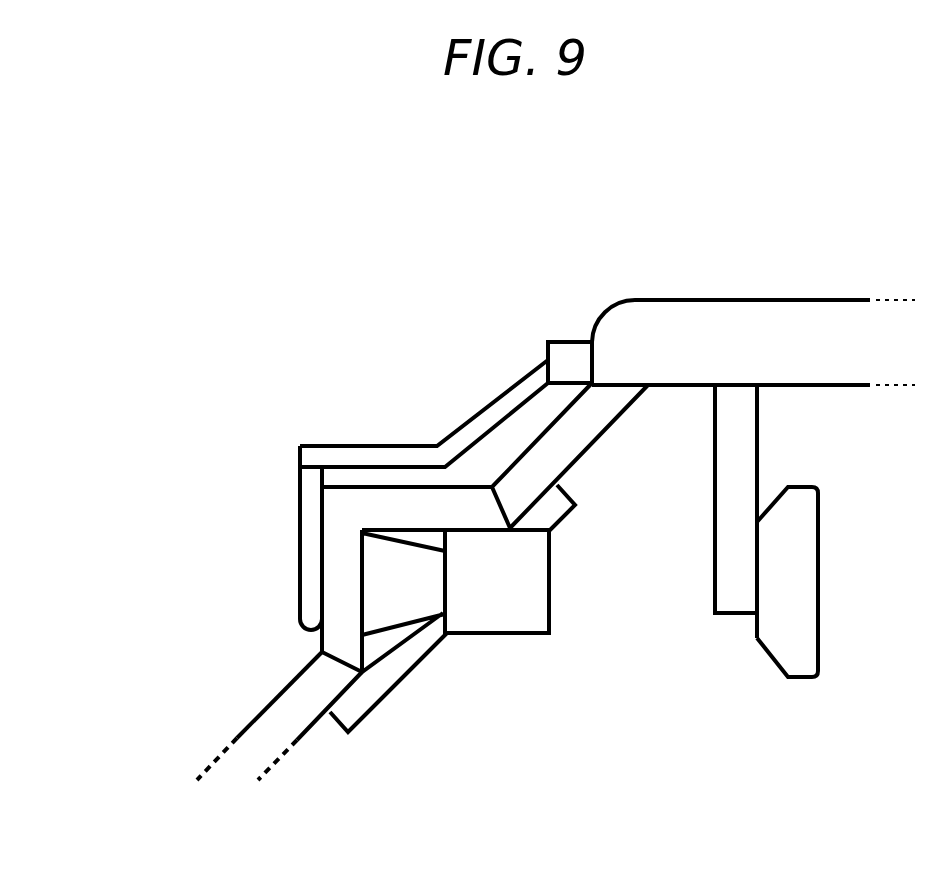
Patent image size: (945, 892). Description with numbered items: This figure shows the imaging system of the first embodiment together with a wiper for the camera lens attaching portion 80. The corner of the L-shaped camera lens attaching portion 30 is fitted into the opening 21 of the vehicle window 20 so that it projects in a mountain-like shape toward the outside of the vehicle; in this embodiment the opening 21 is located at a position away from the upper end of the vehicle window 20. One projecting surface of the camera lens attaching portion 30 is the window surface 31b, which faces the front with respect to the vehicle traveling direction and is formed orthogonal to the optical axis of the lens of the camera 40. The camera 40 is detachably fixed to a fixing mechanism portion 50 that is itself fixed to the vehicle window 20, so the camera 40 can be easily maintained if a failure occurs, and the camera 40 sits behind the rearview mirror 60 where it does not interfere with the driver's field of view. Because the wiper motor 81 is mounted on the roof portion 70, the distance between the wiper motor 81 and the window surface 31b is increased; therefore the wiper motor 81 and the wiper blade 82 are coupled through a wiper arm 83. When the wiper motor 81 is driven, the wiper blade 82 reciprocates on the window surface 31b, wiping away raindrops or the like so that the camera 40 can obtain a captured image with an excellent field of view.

The vehicle window 20 is at (308, 735).
The opening 21 is at (240, 736).
The camera lens attaching portion 30 is at (472, 478).
The window surface 31b is at (320, 642).
The camera 40 is at (535, 635).
The fixing mechanism portion 50 is at (576, 510).
The rearview mirror 60 is at (797, 678).
The roof portion 70 is at (707, 301).
The wiper for the camera lens attaching portion 80 is at (329, 476).
The wiper motor 81 is at (575, 342).
The wiper blade 82 is at (298, 520).
The wiper arm 83 is at (367, 447).